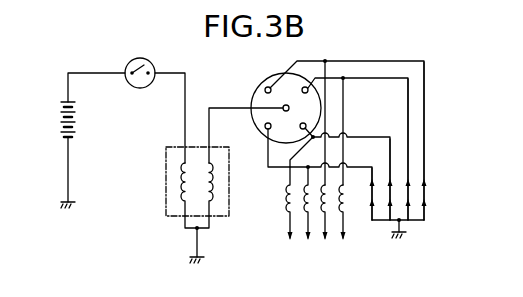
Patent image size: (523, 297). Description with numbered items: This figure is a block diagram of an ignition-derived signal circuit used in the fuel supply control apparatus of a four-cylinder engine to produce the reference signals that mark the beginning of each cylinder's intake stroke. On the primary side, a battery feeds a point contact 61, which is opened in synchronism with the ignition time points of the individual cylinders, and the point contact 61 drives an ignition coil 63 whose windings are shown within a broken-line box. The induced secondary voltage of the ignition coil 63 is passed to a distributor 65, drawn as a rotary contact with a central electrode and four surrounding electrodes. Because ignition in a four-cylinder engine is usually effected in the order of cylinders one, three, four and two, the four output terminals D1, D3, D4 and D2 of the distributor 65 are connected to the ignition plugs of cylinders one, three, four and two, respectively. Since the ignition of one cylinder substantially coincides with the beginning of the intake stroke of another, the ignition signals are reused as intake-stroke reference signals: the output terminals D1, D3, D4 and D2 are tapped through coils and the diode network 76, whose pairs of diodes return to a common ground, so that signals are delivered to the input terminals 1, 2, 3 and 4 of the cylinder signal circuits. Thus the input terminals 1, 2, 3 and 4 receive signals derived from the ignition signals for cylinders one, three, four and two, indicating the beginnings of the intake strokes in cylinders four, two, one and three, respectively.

The point contact 61 is at (128, 62).
The distributor 65 is at (258, 84).
The ignition coil 63 is at (166, 150).
The input terminal 1 is at (290, 216).
The input terminal 2 is at (308, 216).
The input terminal 3 is at (325, 225).
The input terminal 4 is at (343, 225).
The diode network 76 is at (410, 130).
The output terminal D1 is at (385, 137).
The output terminal D2 is at (392, 81).
The output terminal D3 is at (380, 166).
The output terminal D4 is at (441, 197).